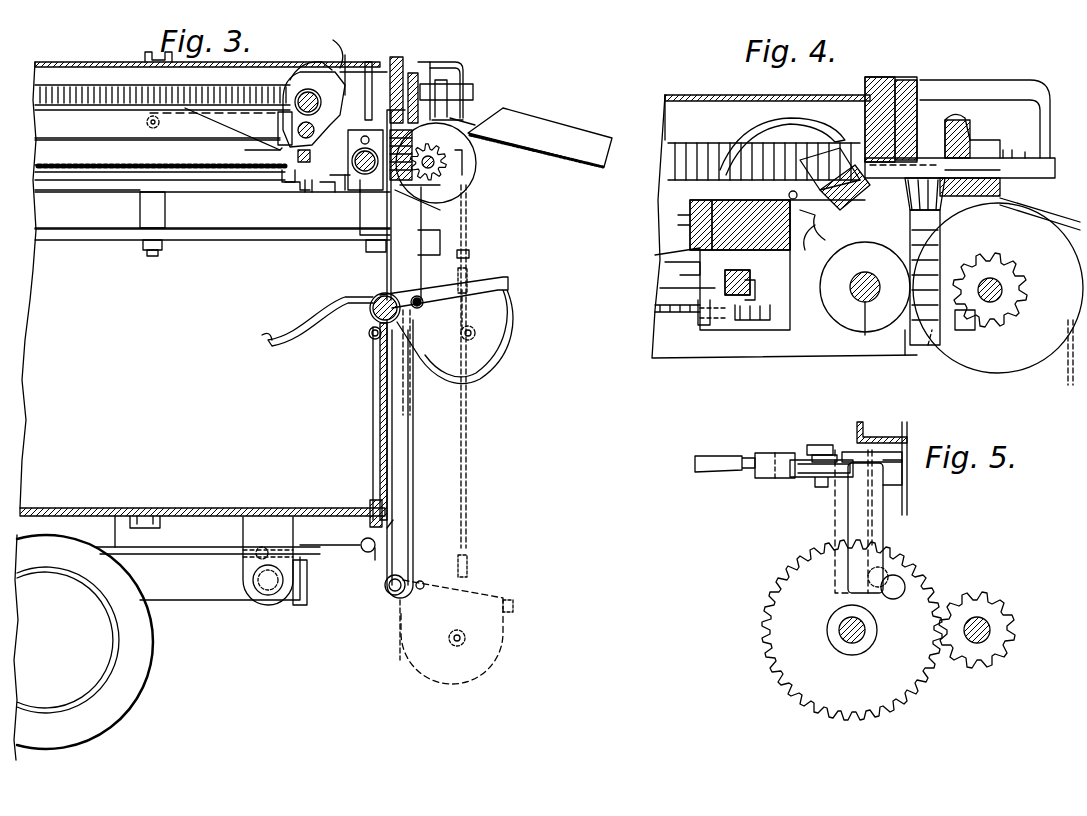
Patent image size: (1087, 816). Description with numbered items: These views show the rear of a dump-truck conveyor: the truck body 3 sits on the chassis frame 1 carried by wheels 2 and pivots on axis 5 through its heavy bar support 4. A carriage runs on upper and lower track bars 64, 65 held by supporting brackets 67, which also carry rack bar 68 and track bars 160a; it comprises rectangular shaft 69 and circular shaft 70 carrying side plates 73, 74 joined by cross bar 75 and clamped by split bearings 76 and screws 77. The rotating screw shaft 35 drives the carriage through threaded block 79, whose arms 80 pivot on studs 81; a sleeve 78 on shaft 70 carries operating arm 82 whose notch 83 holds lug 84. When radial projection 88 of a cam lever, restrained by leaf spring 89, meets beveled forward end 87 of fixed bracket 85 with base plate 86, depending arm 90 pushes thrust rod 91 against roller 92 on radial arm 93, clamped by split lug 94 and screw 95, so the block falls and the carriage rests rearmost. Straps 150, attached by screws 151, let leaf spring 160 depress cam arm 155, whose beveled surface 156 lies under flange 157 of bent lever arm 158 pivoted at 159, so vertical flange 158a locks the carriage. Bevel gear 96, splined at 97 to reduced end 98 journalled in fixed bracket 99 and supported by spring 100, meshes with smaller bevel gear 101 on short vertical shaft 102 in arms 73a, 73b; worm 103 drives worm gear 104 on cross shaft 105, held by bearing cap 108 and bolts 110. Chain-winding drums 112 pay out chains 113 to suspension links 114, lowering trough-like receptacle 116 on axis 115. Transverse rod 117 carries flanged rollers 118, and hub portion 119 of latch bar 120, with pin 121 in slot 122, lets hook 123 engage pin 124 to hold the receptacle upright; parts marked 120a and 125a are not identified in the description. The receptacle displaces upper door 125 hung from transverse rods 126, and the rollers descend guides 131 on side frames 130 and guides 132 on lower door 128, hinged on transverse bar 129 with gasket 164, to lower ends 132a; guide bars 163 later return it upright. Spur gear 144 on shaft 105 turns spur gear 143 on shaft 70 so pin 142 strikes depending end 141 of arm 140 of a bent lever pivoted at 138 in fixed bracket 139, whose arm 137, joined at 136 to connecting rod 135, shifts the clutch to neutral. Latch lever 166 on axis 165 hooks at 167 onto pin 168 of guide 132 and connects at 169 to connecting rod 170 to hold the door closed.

In FIG. 3, the chassis frame 1 is at (190, 584).
In FIG. 3, the wheels 2 is at (83, 647).
In FIG. 3, the truck body 3 is at (110, 383).
In FIG. 4, the truck body 3 is at (790, 360).
In FIG. 3, the heavy bar support 4 is at (268, 508).
In FIG. 3, the axis 5 is at (268, 596).
In FIG. 3, the screw shaft 35 is at (72, 104).
In FIG. 4, the screw shaft 35 is at (686, 143).
In FIG. 3, the upper track bars 64 is at (45, 142).
In FIG. 4, the upper track bars 64 is at (655, 255).
In FIG. 3, the lower track bars 65 is at (112, 170).
In FIG. 4, the lower track bars 65 is at (660, 290).
In FIG. 3, the supporting brackets 67 is at (140, 213).
In FIG. 3, the rack bar 68 is at (100, 192).
In FIG. 4, the rack bar 68 is at (660, 315).
In FIG. 3, the shaft of rectangular cross-section 69 is at (305, 186).
In FIG. 4, the shaft of rectangular cross-section 69 is at (752, 302).
In FIG. 3, the shaft of circular cross-section 70 is at (362, 192).
In FIG. 4, the shaft of circular cross-section 70 is at (865, 332).
In FIG. 5, the shaft of circular cross-section 70 is at (852, 645).
In FIG. 3, the side plate 73 is at (392, 110).
In FIG. 4, the side plate 73 is at (828, 355).
In FIG. 4, the inwardly-presented arm 73a is at (1012, 270).
In FIG. 3, the inwardly-presented arm 73b is at (440, 241).
In FIG. 4, the inwardly-presented arm 73b is at (905, 355).
In FIG. 3, the side plate 74 is at (345, 192).
In FIG. 4, the cross bar 75 is at (725, 278).
In FIG. 3, the split bearings 76 is at (290, 183).
In FIG. 4, the split bearings 76 is at (735, 315).
In FIG. 3, the screws 77 is at (282, 176).
In FIG. 4, the screws 77 is at (700, 325).
In FIG. 3, the sleeve 78 is at (375, 190).
In FIG. 4, the sleeve 78 is at (878, 292).
In FIG. 3, the threaded block 79 is at (368, 62).
In FIG. 4, the threaded block 79 is at (860, 200).
In FIG. 3, the arms 80 is at (312, 95).
In FIG. 4, the arms 80 is at (690, 205).
In FIG. 3, the studs 81 is at (278, 118).
In FIG. 4, the studs 81 is at (725, 140).
In FIG. 3, the operating arm 82 is at (466, 150).
In FIG. 4, the operating arm 82 is at (820, 255).
In FIG. 4, the notch 83 is at (800, 240).
In FIG. 3, the lug 84 is at (388, 150).
In FIG. 4, the lug 84 is at (910, 222).
In FIG. 3, the fixed bracket 85 is at (402, 70).
In FIG. 3, the base plate 86 is at (432, 65).
In FIG. 3, the beveled forward end 87 is at (345, 55).
In FIG. 3, the radial projection 88 is at (324, 46).
In FIG. 3, the leaf spring 89 is at (290, 82).
In FIG. 3, the depending arm 90 is at (298, 154).
In FIG. 3, the thrust rod 91 is at (325, 185).
In FIG. 3, the roller 92 is at (330, 178).
In FIG. 3, the radial arm 93 is at (462, 166).
In FIG. 3, the split lug 94 is at (374, 254).
In FIG. 3, the screw 95 is at (360, 194).
In FIG. 3, the bevel gear 96 is at (440, 72).
In FIG. 4, the bevel gear 96 is at (950, 118).
In FIG. 4, the spline 97 is at (985, 160).
In FIG. 3, the reduced end 98 is at (462, 105).
In FIG. 4, the reduced end 98 is at (1045, 172).
In FIG. 3, the fixed bracket 99 is at (465, 72).
In FIG. 4, the fixed bracket 99 is at (1015, 88).
In FIG. 5, the fixed bracket 99 is at (900, 420).
In FIG. 3, the spring 100 is at (462, 92).
In FIG. 4, the spring 100 is at (1021, 142).
In FIG. 3, the smaller bevel gear 101 is at (478, 125).
In FIG. 4, the smaller bevel gear 101 is at (970, 200).
In FIG. 4, the short vertical shaft 102 is at (938, 345).
In FIG. 3, the worm 103 is at (445, 186).
In FIG. 4, the worm 103 is at (965, 332).
In FIG. 3, the worm gear 104 is at (450, 180).
In FIG. 4, the worm gear 104 is at (1012, 305).
In FIG. 3, the cross shaft 105 is at (452, 170).
In FIG. 4, the cross shaft 105 is at (1005, 295).
In FIG. 5, the cross shaft 105 is at (980, 620).
In FIG. 3, the bearing cap 108 is at (440, 208).
In FIG. 4, the bearing cap 108 is at (950, 340).
In FIG. 3, the bolts 110 is at (468, 196).
In FIG. 4, the bolts 110 is at (985, 335).
In FIG. 3, the chain-winding drums 112 is at (520, 128).
In FIG. 4, the chain-winding drums 112 is at (928, 335).
In FIG. 3, the chains 113 is at (470, 236).
In FIG. 4, the chains 113 is at (1068, 385).
In FIG. 3, the suspension links 114 is at (472, 256).
In FIG. 3, the axis 115 is at (476, 338).
In FIG. 3, the trough-like receptacle 116 is at (495, 370).
In FIG. 3, the transverse rod 117 is at (370, 312).
In FIG. 3, the flanged rollers 118 is at (370, 296).
In FIG. 3, the hub portion 119 is at (310, 315).
In FIG. 3, the latch bar 120 is at (425, 300).
In FIG. 3, the slot 120a is at (430, 376).
In FIG. 3, the inwardly-presented pin 121 is at (420, 305).
In FIG. 3, the slot 122 is at (418, 320).
In FIG. 3, the hook 123 is at (458, 275).
In FIG. 3, the pin 124 is at (495, 290).
In FIG. 3, the upper door 125 is at (572, 158).
In FIG. 4, the upper door 125 is at (1035, 200).
In FIG. 3, the rack bar end 125a is at (580, 140).
In FIG. 4, the transverse rods 126 is at (909, 166).
In FIG. 3, the lower door 128 is at (380, 438).
In FIG. 3, the transverse bar 129 is at (370, 340).
In FIG. 3, the vertical side frames 130 is at (561, 237).
In FIG. 3, the guides 131 is at (470, 300).
In FIG. 3, the vertical guides 132 is at (410, 476).
In FIG. 3, the lower ends 132a is at (388, 590).
In FIG. 5, the long connecting rod 135 is at (712, 465).
In FIG. 5, the pivot 136 is at (816, 437).
In FIG. 5, the arm 137 is at (790, 476).
In FIG. 5, the pivot 138 is at (905, 462).
In FIG. 5, the fixed bracket 139 is at (905, 490).
In FIG. 5, the arm 140 is at (840, 476).
In FIG. 5, the depending end 141 is at (855, 525).
In FIG. 5, the pin 142 is at (893, 597).
In FIG. 5, the spur gear 143 is at (765, 655).
In FIG. 5, the smaller spur gear 144 is at (977, 665).
In FIG. 4, the straps 150 is at (815, 150).
In FIG. 4, the screws 151 is at (793, 200).
In FIG. 3, the cam arm 155 is at (245, 150).
In FIG. 4, the cam arm 155 is at (665, 266).
In FIG. 4, the beveled outer surface 156 is at (678, 226).
In FIG. 4, the inwardly-presented flange 157 is at (678, 216).
In FIG. 3, the bent lever arm 158 is at (215, 112).
In FIG. 4, the bent lever arm 158 is at (660, 160).
In FIG. 4, the vertical flange 158a is at (692, 302).
In FIG. 3, the pivot 159 is at (147, 122).
In FIG. 4, the leaf spring 160 is at (752, 96).
In FIG. 3, the track bars 160a is at (90, 236).
In FIG. 3, the guide bars 163 is at (262, 338).
In FIG. 3, the gasket 164 is at (395, 518).
In FIG. 3, the common axis 165 is at (370, 513).
In FIG. 3, the latch lever 166 is at (314, 585).
In FIG. 3, the hook 167 is at (375, 545).
In FIG. 3, the pin 168 is at (370, 552).
In FIG. 3, the pivot 169 is at (256, 550).
In FIG. 3, the connecting rod 170 is at (115, 508).